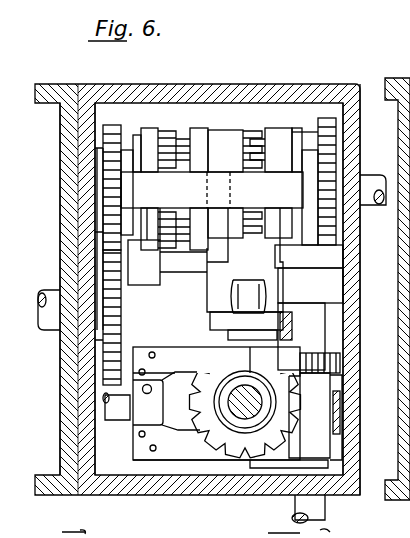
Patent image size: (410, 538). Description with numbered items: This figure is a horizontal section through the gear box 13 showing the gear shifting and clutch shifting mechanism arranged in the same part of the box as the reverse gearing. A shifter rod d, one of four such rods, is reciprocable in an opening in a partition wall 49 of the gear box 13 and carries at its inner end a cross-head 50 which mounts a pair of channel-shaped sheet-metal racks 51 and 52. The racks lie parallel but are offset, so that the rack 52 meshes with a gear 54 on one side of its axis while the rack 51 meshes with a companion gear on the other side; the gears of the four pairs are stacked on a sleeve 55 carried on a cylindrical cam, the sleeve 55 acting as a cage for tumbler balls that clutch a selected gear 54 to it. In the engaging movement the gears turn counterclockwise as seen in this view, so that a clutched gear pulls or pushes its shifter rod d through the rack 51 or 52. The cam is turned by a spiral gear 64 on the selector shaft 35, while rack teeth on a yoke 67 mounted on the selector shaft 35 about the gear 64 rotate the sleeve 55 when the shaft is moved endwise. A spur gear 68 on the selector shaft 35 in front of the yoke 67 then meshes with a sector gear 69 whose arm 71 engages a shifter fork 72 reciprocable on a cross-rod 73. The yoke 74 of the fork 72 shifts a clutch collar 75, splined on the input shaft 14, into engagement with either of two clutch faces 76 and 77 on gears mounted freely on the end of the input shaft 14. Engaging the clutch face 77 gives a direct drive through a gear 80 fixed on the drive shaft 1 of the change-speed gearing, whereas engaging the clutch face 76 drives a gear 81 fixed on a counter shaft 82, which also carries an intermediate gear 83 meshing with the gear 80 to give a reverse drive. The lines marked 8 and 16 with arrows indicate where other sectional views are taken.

The drive shaft 1 is at (52, 300).
The direction of movement 8 is at (248, 336).
The gear box 13 is at (352, 407).
The input shaft 14 is at (373, 178).
The direction of movement 16 is at (165, 347).
The selector shaft 35 is at (320, 503).
The partition wall 49 is at (80, 450).
The cross-head 50 is at (166, 401).
The rack 51 is at (230, 454).
The rack 52 is at (168, 357).
The gear 54 is at (245, 402).
The sleeve 55 is at (272, 410).
The spiral gear 64 is at (338, 400).
The yoke 67 is at (325, 447).
The spur gear 68 is at (336, 360).
The sector gear 69 is at (292, 332).
The arm 71 is at (252, 300).
The shifter fork 72 is at (276, 299).
The cross-rod 73 is at (178, 262).
The yoke 74 is at (222, 222).
The clutch collar 75 is at (200, 136).
The clutch face 76 is at (268, 130).
The clutch face 77 is at (160, 130).
The gear 80 is at (121, 330).
The gear 81 is at (325, 118).
The counter shaft 82 is at (212, 190).
The intermediate gear 83 is at (118, 125).
The shifter rod d is at (117, 412).